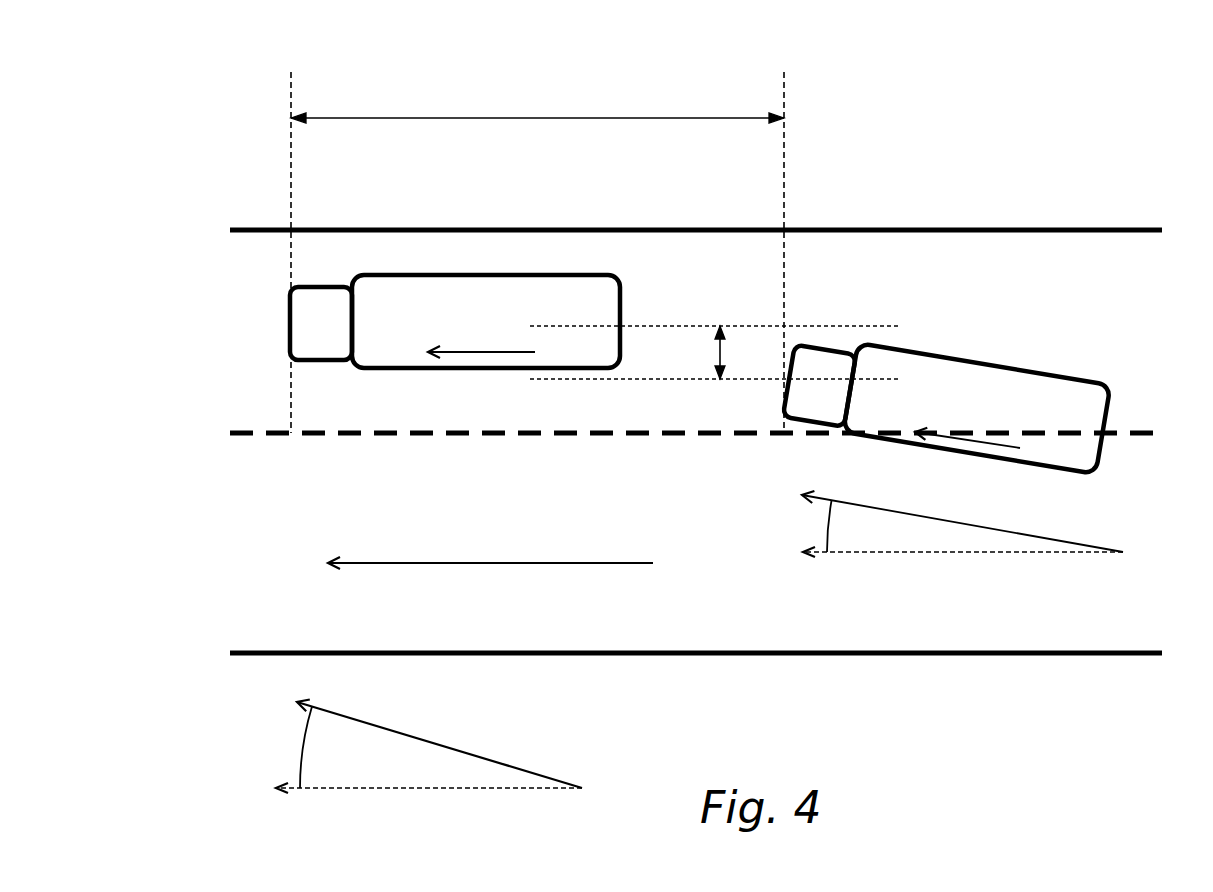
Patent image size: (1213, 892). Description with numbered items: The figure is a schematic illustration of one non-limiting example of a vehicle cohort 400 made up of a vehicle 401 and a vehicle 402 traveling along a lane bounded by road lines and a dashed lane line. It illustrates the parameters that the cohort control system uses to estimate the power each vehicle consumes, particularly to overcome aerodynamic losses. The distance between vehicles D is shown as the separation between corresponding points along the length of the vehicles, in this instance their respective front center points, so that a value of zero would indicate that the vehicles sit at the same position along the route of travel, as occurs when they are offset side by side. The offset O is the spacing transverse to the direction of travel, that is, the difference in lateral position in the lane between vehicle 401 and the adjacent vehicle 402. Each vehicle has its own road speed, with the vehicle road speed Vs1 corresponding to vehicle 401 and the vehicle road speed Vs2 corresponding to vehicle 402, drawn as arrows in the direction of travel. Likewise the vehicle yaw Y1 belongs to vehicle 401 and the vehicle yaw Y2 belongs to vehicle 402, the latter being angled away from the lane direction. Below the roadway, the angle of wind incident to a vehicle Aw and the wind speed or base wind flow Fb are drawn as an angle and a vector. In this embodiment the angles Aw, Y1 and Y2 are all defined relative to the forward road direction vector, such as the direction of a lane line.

The vehicle cohort 400 is at (1140, 138).
The vehicle 401 is at (622, 290).
The vehicle 402 is at (1114, 392).
The set of distances between vehicles D is at (590, 117).
The offset O is at (717, 349).
The vehicle road speed Vs1 is at (484, 338).
The vehicle road speed Vs2 is at (976, 426).
The vehicle yaw Y1 is at (326, 562).
The vehicle yaw Y2 is at (822, 528).
The angle of wind incident to a vehicle Aw is at (296, 750).
The wind speed or base wind flow Fb is at (437, 744).